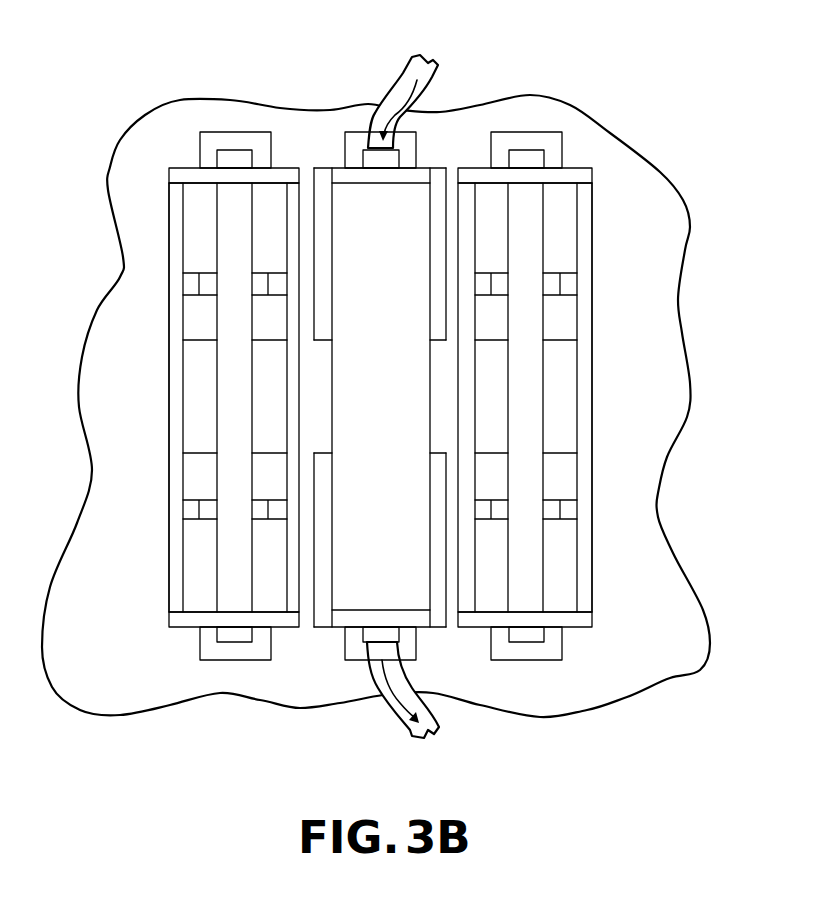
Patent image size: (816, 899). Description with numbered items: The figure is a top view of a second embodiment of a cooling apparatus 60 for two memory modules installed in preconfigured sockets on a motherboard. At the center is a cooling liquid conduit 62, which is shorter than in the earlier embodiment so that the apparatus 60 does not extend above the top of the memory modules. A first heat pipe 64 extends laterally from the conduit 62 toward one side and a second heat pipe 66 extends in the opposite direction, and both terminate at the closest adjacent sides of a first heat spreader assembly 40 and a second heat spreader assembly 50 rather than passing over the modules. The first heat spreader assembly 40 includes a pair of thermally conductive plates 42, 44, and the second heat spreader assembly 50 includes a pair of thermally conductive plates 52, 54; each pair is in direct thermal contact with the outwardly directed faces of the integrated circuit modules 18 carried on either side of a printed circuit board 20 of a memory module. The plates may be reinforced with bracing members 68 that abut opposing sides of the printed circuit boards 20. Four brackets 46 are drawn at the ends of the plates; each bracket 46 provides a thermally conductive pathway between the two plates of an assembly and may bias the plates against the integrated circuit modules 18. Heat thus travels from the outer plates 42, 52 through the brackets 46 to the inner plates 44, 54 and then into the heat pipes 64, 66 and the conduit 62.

The integrated circuit modules 18 is at (193, 553).
The printed circuit board 20 is at (240, 158).
The first heat spreader assembly 40 is at (176, 353).
The thermally conductive plate 42 is at (167, 282).
The thermally conductive plate 44 is at (303, 195).
The bracket 46 is at (185, 167).
The second heat spreader assembly 50 is at (598, 397).
The thermally conductive plate 52 is at (593, 388).
The thermally conductive plate 54 is at (457, 203).
The cooling apparatus 60 is at (550, 87).
The cooling liquid conduit 62 is at (363, 340).
The heat pipe 64 is at (313, 360).
The heat pipe 66 is at (447, 428).
The bracing members 68 is at (185, 408).